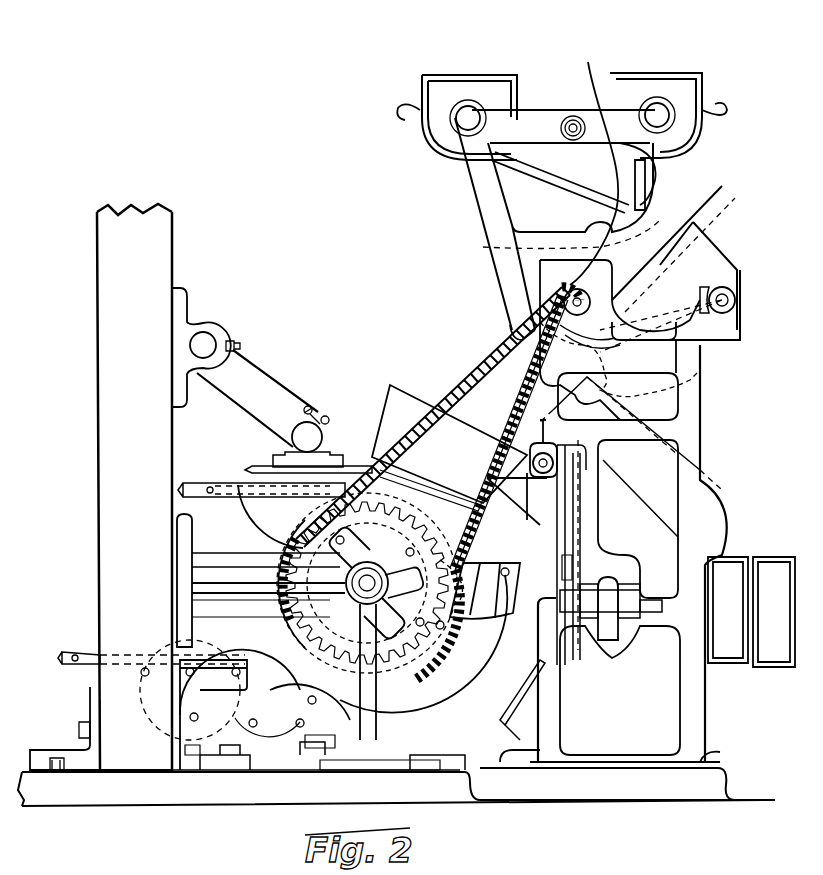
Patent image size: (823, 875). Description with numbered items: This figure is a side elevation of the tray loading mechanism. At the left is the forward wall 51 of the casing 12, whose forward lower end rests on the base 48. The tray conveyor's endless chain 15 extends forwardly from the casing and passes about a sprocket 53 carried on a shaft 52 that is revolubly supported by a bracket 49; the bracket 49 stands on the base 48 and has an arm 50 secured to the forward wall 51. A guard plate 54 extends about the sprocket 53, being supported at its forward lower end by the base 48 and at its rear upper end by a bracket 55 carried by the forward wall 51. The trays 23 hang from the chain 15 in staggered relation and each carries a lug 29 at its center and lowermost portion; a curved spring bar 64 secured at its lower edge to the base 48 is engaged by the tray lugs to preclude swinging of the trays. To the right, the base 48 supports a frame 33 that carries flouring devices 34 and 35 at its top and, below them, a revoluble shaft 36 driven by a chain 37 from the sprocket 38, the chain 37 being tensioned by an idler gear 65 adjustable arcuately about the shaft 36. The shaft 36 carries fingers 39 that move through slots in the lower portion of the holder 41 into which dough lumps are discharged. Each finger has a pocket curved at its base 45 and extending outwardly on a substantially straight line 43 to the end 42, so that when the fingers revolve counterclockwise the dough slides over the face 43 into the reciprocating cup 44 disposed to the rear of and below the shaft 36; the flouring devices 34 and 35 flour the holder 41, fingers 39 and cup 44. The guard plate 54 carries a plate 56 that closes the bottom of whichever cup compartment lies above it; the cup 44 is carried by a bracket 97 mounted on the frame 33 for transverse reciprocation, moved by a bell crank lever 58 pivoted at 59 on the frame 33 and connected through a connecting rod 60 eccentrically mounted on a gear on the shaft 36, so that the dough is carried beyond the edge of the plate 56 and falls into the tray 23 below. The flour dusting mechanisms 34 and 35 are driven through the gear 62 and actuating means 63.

The casing 12 is at (113, 478).
The endless chain 15 is at (88, 655).
The trays 23 is at (295, 715).
The lug 29 is at (195, 720).
The frame 33 is at (702, 410).
The flouring device 34 is at (702, 100).
The flouring device 35 is at (435, 93).
The revoluble shaft 36 is at (545, 300).
The chain 37 is at (445, 395).
The sprocket 38 is at (313, 487).
The fingers 39 is at (612, 275).
The holder 41 is at (700, 245).
The end of finger 42 is at (495, 318).
The straight line face of finger 43 is at (478, 300).
The reciprocating cup 44 is at (322, 445).
The curved base of pocket 45 is at (500, 243).
The base 48 is at (440, 790).
The bracket 49 is at (315, 720).
The arm 50 is at (245, 553).
The forward wall 51 is at (158, 263).
The shaft 52 is at (245, 577).
The sprocket 53 is at (185, 650).
The guard plate 54 is at (250, 468).
The bracket 55 is at (250, 372).
The plate 56 is at (368, 455).
The bell crank lever 58 is at (560, 552).
The pivot 59 is at (668, 630).
The connecting rod 60 is at (605, 620).
The gear 62 is at (577, 113).
The actuating means 63 is at (537, 165).
The curved bar 64 is at (482, 660).
The idler gear 65 is at (690, 342).
The bracket 97 is at (538, 500).